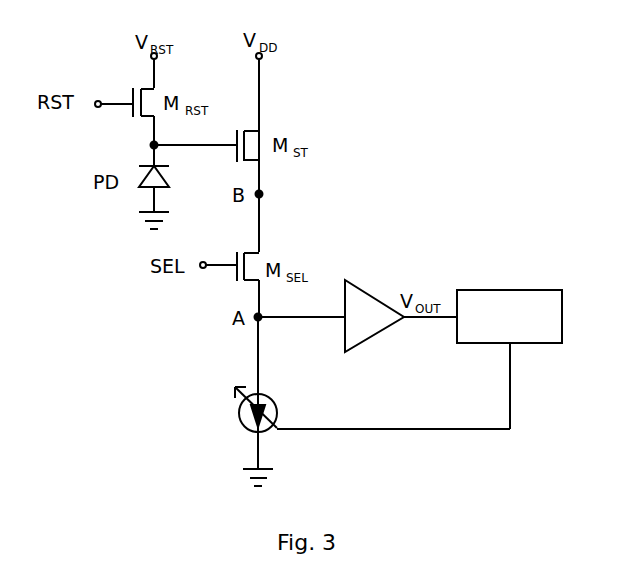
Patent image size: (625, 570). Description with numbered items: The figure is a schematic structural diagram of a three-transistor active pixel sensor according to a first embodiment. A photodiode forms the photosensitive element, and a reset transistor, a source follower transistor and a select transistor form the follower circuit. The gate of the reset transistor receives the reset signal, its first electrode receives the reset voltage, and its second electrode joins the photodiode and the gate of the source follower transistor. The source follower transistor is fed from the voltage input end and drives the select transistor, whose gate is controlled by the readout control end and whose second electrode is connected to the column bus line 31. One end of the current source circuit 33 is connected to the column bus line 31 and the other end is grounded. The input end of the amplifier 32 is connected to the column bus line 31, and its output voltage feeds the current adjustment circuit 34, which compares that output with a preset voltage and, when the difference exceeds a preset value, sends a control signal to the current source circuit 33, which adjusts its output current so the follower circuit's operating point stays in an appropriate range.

The column bus line 31 is at (258, 380).
The amplifier 32 is at (350, 299).
The current source circuit 33 is at (278, 395).
The current adjustment circuit 34 is at (503, 300).